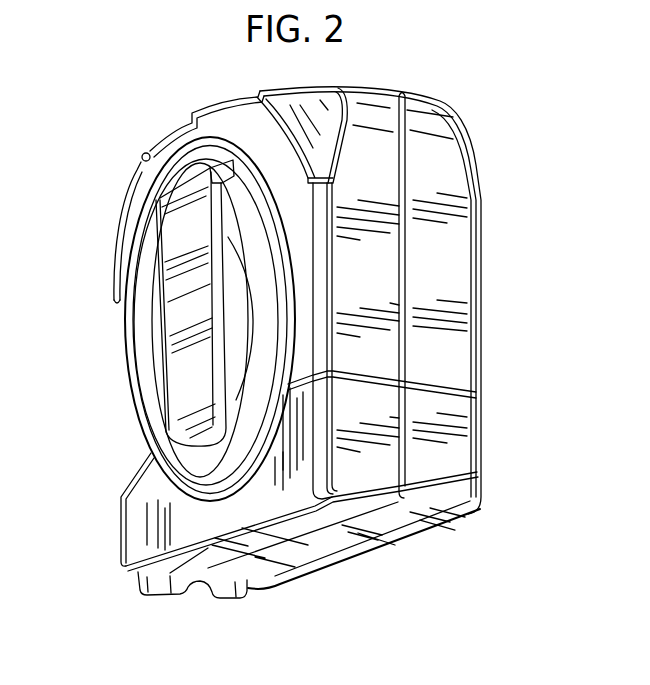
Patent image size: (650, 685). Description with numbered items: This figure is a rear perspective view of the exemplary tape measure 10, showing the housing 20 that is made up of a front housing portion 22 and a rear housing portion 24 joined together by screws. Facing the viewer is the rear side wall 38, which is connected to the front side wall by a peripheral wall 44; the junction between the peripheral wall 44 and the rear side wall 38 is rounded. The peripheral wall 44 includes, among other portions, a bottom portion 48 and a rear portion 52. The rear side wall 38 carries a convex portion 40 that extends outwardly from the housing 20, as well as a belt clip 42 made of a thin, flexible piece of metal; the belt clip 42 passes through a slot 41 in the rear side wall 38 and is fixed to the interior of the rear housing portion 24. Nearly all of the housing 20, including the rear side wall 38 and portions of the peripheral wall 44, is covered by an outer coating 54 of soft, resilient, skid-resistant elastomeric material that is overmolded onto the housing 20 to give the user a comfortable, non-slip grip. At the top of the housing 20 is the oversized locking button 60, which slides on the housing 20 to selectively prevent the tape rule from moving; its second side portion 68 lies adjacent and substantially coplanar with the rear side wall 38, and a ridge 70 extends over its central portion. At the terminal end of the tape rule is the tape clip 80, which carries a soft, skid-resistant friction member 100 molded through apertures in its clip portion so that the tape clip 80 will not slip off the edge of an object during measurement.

The tape measure 10 is at (512, 135).
The housing 20 is at (495, 182).
The front housing portion 22 is at (425, 110).
The rear housing portion 24 is at (367, 103).
The rear side wall 38 is at (133, 510).
The convex portion 40 is at (143, 365).
The slot 41 is at (223, 163).
The belt clip 42 is at (167, 313).
The peripheral wall 44 is at (440, 449).
The bottom portion 48 is at (400, 530).
The rear portion 52 is at (463, 363).
The outer coating 54 is at (463, 407).
The locking button 60 is at (115, 217).
The second side portion 68 is at (130, 256).
The ridge 70 is at (141, 157).
The tape clip 80 is at (127, 592).
The friction member 100 is at (248, 592).